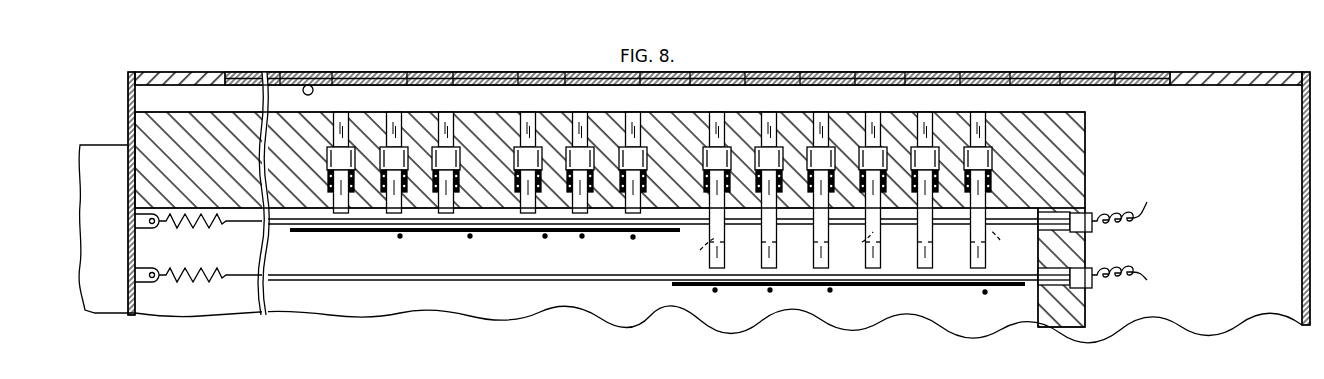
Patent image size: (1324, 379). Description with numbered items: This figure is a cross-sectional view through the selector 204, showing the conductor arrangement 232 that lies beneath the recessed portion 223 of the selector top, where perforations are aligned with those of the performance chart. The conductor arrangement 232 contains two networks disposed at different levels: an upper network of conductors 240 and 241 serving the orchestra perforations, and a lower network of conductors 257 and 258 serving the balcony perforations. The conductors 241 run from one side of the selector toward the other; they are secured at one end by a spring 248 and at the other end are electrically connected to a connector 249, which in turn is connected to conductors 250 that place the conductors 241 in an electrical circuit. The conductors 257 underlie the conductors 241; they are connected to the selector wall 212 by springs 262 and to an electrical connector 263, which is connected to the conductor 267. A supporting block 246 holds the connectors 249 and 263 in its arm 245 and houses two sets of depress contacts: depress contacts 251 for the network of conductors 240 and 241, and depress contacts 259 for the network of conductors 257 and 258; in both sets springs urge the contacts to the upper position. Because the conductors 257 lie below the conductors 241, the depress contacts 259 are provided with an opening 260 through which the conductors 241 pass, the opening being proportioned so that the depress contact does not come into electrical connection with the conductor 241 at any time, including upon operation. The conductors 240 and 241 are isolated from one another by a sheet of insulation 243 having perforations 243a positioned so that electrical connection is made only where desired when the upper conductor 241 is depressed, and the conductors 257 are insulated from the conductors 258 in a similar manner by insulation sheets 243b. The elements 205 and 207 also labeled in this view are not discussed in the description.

The selector 204 is at (245, 73).
The housing section 205 is at (103, 155).
The cover strip 207 is at (492, 72).
The selector wall 212 is at (128, 305).
The recessed portion 223 is at (312, 86).
The conductor arrangement 232 is at (988, 301).
The conductors 240 is at (398, 234).
The conductors 241 is at (337, 234).
The sheet of insulation 243 is at (468, 234).
The perforations 243a is at (588, 234).
The insulation sheets 243b is at (697, 289).
The arm 245 is at (1080, 314).
The supporting block 246 is at (1085, 138).
The spring 248 is at (203, 232).
The connector 249 is at (1094, 213).
The conductors 250 is at (1155, 206).
The depress contacts 251 is at (446, 126).
The conductors 257 is at (468, 281).
The conductors 258 is at (877, 290).
The depress contacts 259 is at (873, 123).
The opening 260 is at (850, 248).
The springs 262 is at (178, 283).
The electrical connector 263 is at (1096, 275).
The conductor 267 is at (1160, 272).